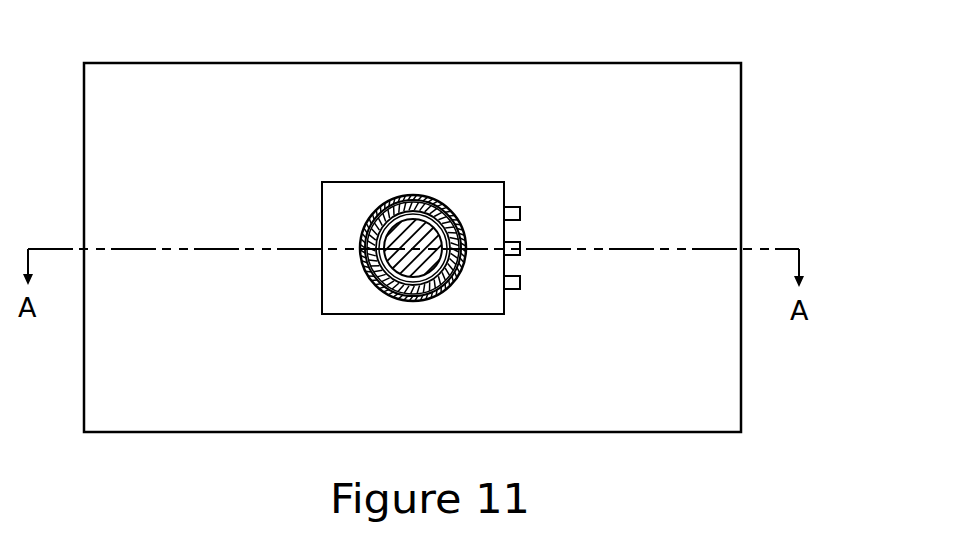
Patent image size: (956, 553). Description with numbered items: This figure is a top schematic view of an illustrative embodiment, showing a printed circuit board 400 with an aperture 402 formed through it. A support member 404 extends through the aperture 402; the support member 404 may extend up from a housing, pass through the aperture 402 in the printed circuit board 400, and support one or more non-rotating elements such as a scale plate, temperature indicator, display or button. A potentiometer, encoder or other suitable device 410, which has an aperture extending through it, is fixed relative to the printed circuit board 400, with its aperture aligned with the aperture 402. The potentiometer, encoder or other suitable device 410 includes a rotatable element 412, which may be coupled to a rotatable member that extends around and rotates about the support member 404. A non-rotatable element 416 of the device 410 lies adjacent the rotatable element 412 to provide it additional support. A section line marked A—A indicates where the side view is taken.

The printed circuit board 400 is at (708, 78).
The aperture 402 is at (418, 202).
The support member 404 is at (385, 202).
The potentiometer, encoder or other suitable device 410 is at (483, 302).
The rotatable element 412 is at (361, 250).
The non-rotatable element 416 is at (363, 270).